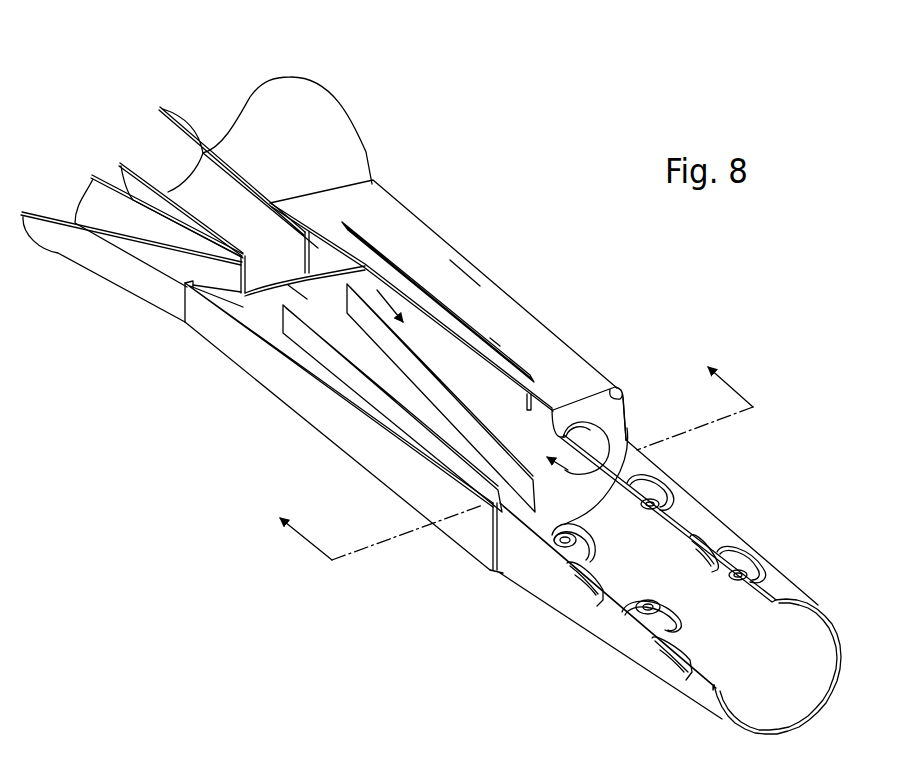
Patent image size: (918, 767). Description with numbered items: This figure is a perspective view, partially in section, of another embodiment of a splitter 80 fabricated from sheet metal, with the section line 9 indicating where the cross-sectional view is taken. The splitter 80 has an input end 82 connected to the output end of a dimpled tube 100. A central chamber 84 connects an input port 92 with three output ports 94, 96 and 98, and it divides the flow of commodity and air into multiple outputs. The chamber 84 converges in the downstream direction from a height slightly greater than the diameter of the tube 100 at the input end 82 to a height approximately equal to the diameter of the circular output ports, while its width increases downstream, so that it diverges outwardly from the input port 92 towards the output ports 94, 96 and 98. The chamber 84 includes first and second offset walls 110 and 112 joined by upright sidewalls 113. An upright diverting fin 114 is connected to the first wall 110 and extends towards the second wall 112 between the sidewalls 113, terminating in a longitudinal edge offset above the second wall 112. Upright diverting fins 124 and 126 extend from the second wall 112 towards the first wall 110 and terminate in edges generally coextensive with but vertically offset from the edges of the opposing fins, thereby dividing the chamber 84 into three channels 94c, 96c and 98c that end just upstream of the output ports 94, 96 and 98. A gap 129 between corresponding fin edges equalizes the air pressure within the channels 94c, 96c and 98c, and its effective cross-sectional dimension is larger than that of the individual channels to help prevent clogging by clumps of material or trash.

The splitter 80 is at (540, 212).
The input end 82 is at (513, 563).
The central chamber 84 is at (326, 286).
The input port 92 is at (486, 508).
The output port 94 is at (262, 93).
The channel 94c is at (375, 293).
The output port 96 is at (172, 107).
The channel 96c is at (283, 270).
The output port 98 is at (78, 262).
The channel 98c is at (185, 288).
The dimpled tube 100 is at (708, 526).
The first offset wall 110 is at (470, 291).
The second offset wall 112 is at (265, 318).
The upright sidewall 113 is at (213, 328).
The upright diverting fin 114 is at (490, 340).
The upright diverting fin 124 is at (377, 337).
The upright diverting fin 126 is at (317, 357).
The gap 129 is at (628, 420).
The section line 9- 9 is at (507, 451).